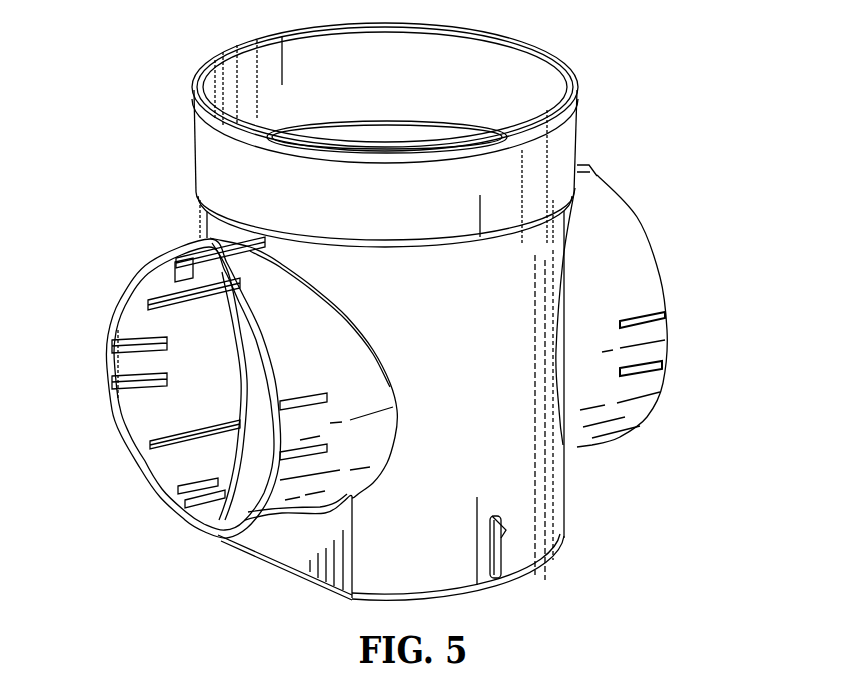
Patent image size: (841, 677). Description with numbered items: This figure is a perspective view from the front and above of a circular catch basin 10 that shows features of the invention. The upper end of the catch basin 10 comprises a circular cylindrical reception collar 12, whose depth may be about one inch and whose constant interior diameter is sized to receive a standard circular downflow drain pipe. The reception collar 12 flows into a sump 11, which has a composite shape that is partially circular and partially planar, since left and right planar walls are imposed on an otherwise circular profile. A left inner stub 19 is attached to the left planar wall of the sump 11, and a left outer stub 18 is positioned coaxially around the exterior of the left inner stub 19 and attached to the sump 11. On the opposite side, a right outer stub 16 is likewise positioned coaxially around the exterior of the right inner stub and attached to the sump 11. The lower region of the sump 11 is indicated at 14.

The catch basin 10 is at (645, 62).
The sump 11 is at (538, 458).
The reception collar 12 is at (550, 148).
The bottom rim 14 is at (538, 548).
The right outer stub 16 is at (610, 247).
The left outer stub 18 is at (297, 362).
The left inner stub 19 is at (173, 468).